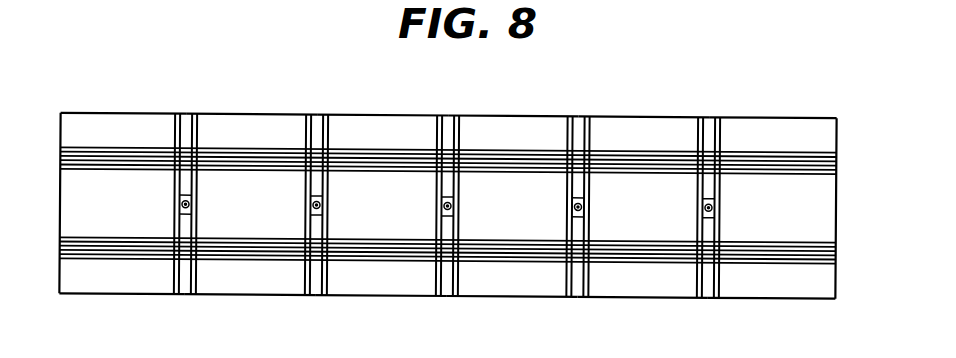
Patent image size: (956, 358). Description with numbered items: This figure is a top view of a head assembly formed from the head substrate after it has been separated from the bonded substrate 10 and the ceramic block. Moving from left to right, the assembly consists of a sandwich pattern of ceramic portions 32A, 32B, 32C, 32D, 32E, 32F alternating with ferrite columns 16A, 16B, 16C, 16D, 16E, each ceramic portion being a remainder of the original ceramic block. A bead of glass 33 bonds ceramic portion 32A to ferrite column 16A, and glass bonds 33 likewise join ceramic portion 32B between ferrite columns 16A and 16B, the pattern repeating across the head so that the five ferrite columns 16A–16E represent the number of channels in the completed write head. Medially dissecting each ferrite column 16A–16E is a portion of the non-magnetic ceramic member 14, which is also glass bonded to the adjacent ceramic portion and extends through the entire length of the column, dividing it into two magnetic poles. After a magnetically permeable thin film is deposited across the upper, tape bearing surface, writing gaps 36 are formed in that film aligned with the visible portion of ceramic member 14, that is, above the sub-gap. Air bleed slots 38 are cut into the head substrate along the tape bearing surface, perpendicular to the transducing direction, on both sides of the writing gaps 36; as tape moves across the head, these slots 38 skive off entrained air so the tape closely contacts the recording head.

The bonded substrate 10 is at (88, 336).
The ceramic member 14 is at (454, 202).
The ferrite column 16A is at (188, 122).
The ferrite column 16B is at (318, 123).
The ferrite column 16C is at (448, 123).
The ferrite column 16D is at (579, 123).
The ferrite column 16E is at (709, 123).
The ceramic portion 32A is at (86, 143).
The ceramic portion 32B is at (231, 143).
The ceramic portion 32C is at (363, 143).
The ceramic portion 32D is at (492, 143).
The ceramic portion 32E is at (623, 143).
The ceramic portion 32F is at (752, 143).
The bead of glass 33 is at (590, 217).
The writing gap 36 is at (311, 205).
The air bleed slot 38 is at (840, 150).